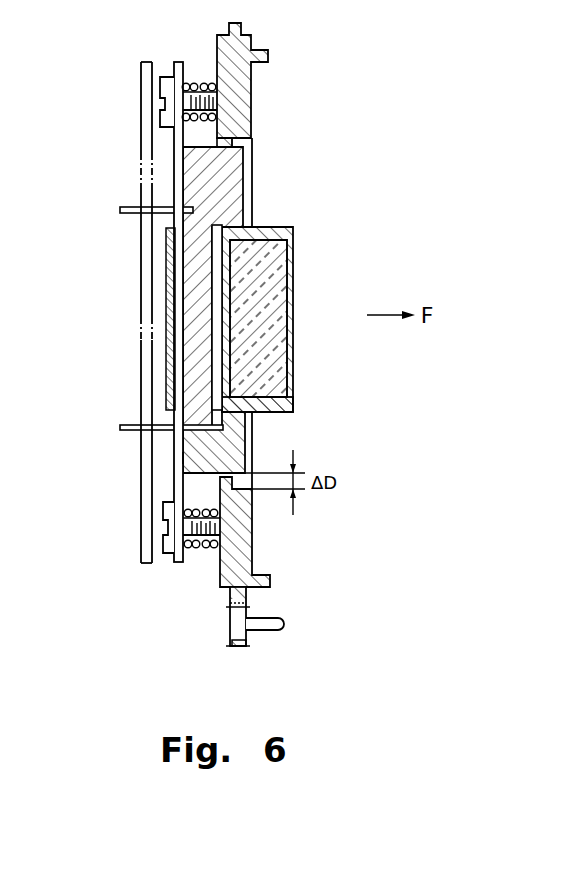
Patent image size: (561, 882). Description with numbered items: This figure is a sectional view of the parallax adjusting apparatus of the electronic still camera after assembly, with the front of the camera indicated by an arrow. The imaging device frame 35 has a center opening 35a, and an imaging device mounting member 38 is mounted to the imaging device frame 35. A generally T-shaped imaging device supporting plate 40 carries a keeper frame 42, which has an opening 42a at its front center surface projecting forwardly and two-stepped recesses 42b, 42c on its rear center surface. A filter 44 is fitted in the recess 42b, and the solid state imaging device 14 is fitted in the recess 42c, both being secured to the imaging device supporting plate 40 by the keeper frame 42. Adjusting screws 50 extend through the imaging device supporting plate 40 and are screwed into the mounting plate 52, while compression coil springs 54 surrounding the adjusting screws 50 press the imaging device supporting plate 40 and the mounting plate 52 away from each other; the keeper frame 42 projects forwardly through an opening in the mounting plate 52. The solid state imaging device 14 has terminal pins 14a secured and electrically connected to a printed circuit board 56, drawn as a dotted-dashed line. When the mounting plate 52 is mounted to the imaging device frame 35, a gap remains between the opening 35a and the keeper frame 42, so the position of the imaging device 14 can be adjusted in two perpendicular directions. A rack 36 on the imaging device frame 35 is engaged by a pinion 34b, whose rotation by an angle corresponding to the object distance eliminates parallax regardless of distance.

The solid state imaging device 14 is at (213, 342).
The terminal pins 14a is at (131, 207).
The pinion 34b is at (231, 632).
The imaging device frame 35 is at (249, 90).
The center opening 35a is at (232, 142).
The rack 36 is at (247, 628).
The imaging device mounting member 38 is at (183, 458).
The imaging device supporting plate 40 is at (175, 152).
The keeper frame 42 is at (243, 190).
The opening 42a is at (290, 262).
The recess 42b is at (282, 390).
The recess 42c is at (222, 412).
The filter 44 is at (282, 312).
The adjusting screws 50 is at (165, 77).
The mounting plate 52 is at (231, 592).
The compression coil springs 54 is at (203, 83).
The printed circuit board 56 is at (141, 97).